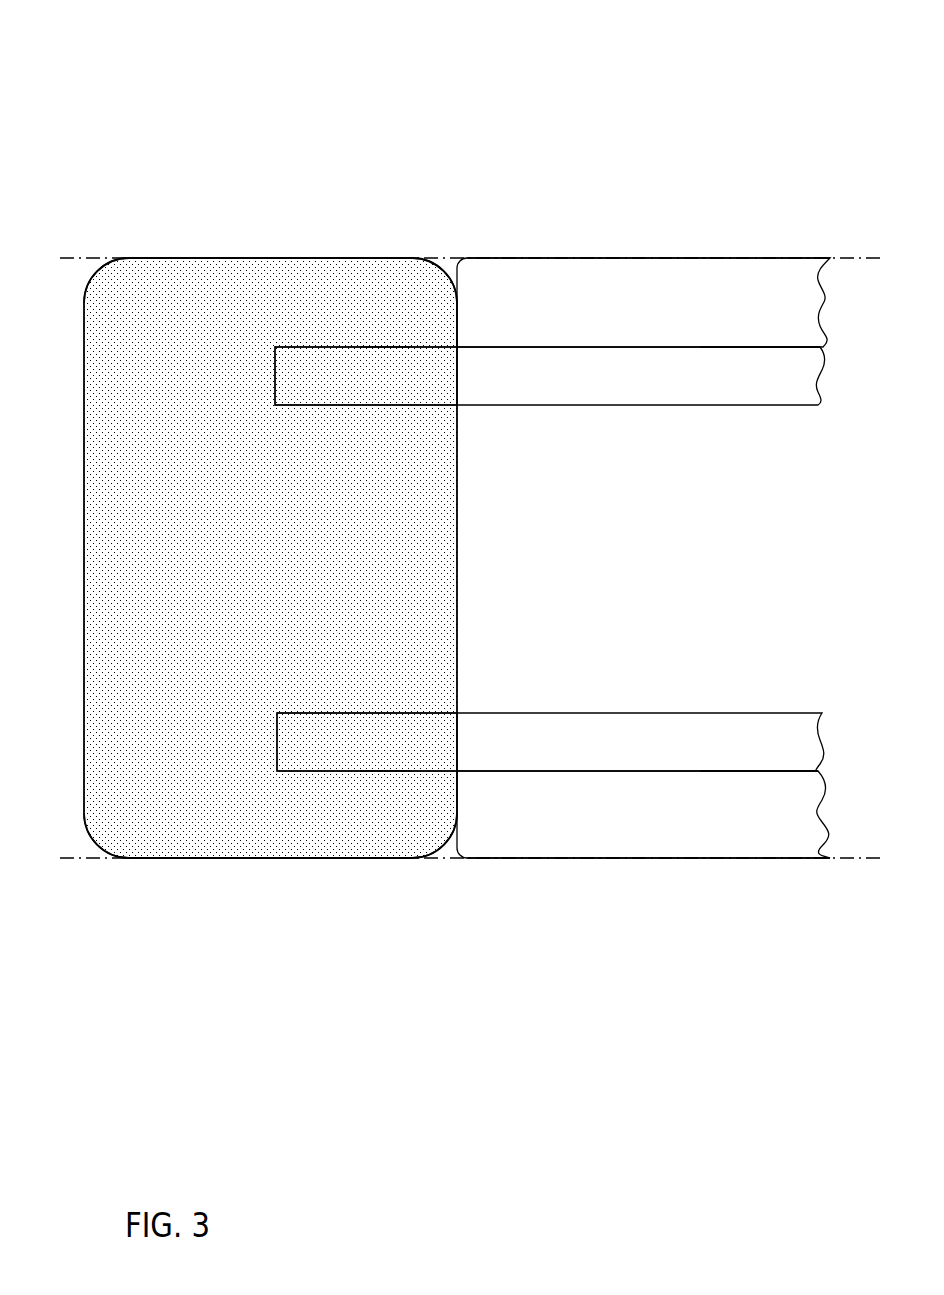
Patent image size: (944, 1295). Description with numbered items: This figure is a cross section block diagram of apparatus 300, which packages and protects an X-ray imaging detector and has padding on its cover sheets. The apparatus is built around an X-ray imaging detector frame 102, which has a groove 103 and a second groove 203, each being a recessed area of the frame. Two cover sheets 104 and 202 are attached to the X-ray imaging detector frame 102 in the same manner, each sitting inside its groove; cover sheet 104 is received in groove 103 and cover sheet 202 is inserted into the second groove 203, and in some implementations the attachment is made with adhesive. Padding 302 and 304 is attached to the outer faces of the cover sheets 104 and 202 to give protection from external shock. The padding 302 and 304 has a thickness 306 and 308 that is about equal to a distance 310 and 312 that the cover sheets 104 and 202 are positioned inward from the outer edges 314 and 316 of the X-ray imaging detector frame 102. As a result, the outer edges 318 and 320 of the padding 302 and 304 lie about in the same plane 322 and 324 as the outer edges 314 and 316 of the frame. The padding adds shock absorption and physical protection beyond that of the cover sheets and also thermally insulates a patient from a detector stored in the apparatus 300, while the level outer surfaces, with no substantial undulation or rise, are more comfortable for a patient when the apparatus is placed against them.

The apparatus 300 is at (851, 41).
The X-ray imaging detector frame 102 is at (252, 584).
The groove 103 is at (436, 387).
The cover sheet 104 is at (678, 387).
The cover sheet 202 is at (678, 754).
The second groove 203 is at (367, 742).
The padding 302 is at (727, 315).
The padding 304 is at (727, 832).
The thickness 306 is at (776, 257).
The thickness 308 is at (776, 770).
The distance 310 is at (380, 259).
The distance 312 is at (380, 772).
The outer edge 314 is at (318, 258).
The outer edge 316 is at (318, 858).
The outer edge 318 is at (603, 258).
The outer edge 320 is at (603, 858).
The plane 322 is at (77, 258).
The plane 324 is at (77, 858).